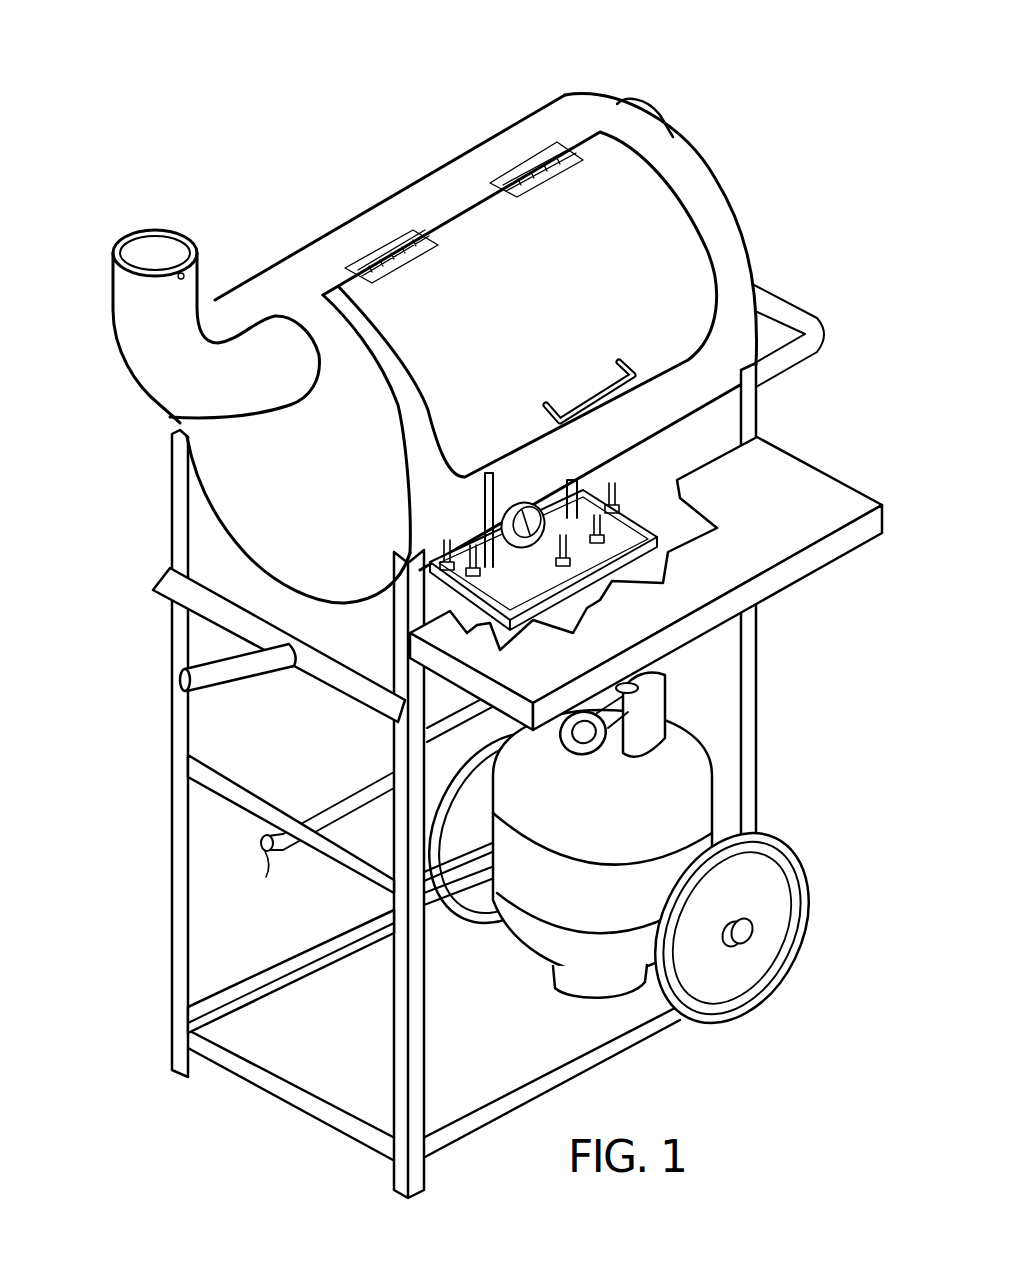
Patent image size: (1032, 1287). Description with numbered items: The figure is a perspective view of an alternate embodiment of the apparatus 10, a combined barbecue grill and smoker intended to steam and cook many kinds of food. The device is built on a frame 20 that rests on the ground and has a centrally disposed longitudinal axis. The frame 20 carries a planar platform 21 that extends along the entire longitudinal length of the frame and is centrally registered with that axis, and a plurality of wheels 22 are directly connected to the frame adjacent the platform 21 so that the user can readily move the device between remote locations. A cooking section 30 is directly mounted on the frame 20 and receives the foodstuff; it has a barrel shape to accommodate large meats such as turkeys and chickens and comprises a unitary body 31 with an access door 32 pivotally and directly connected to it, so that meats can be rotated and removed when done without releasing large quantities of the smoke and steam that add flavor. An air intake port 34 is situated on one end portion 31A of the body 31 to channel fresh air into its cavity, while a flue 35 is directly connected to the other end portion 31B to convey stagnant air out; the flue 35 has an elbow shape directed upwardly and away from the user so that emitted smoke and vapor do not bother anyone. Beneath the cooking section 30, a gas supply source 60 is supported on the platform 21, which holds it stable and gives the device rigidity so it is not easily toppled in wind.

The apparatus 10 is at (297, 100).
The frame 20 is at (747, 717).
The planar platform 21 is at (557, 1032).
The wheels 22 is at (487, 880).
The cooking section 30 is at (750, 173).
The unitary body 31 is at (430, 192).
The end portion of the body 31A is at (677, 183).
The end portion of the body 31B is at (227, 470).
The access door 32 is at (666, 286).
The air intake port 34 is at (650, 108).
The flue 35 is at (153, 247).
The gas supply source 60 is at (677, 753).